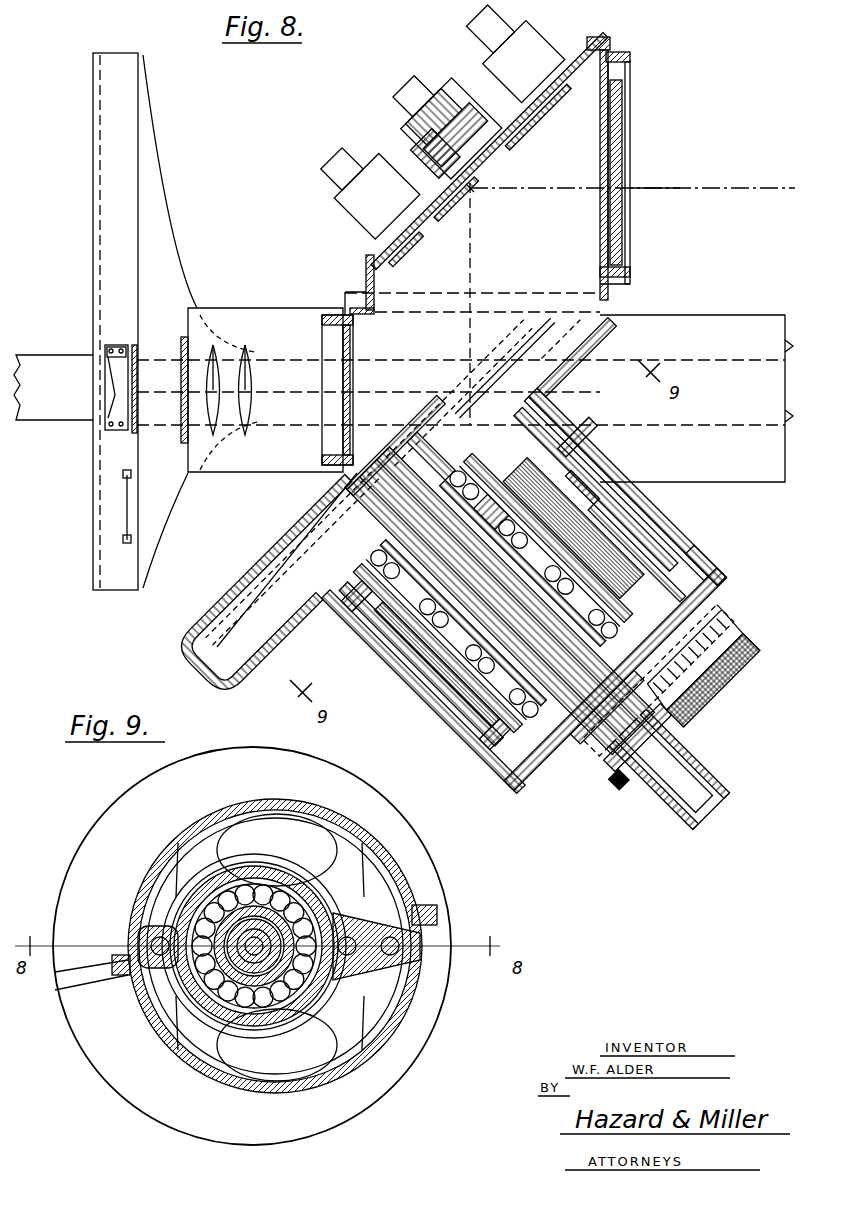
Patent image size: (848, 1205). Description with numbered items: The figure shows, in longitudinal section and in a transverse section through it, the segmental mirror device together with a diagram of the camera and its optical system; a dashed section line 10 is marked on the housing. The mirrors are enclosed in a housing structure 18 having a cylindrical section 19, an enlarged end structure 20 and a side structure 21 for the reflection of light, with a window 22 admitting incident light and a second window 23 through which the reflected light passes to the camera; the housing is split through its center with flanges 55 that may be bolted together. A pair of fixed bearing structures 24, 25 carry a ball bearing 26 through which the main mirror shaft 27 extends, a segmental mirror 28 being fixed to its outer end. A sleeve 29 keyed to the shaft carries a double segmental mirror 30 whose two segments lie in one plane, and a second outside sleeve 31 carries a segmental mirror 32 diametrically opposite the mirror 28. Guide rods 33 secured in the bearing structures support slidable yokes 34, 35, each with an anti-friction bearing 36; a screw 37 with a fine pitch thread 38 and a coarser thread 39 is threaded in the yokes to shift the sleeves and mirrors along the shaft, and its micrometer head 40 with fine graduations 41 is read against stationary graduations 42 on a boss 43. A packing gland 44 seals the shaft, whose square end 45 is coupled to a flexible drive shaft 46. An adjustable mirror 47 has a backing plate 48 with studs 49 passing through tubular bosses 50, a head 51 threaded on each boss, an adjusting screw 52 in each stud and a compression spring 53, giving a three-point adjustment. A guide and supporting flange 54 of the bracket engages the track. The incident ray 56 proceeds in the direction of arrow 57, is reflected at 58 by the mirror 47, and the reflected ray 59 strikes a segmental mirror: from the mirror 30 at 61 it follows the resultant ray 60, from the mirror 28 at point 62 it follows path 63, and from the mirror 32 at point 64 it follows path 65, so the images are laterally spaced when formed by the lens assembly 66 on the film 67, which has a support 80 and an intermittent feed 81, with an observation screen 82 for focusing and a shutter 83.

In FIG. 8, the optical axis light path 10 is at (556, 312).
In FIG. 8, the housing structure 18 is at (590, 345).
In FIG. 9, the housing structure 18 is at (402, 848).
In FIG. 8, the cylindrical section 19 is at (674, 536).
In FIG. 8, the enlarged end structure 20 is at (272, 642).
In FIG. 8, the side structure 21 is at (572, 58).
In FIG. 8, the window 22 is at (616, 170).
In FIG. 8, the second window 23 is at (325, 440).
In FIG. 8, the fixed bearing structure 24 is at (554, 416).
In FIG. 9, the fixed bearing structure 24 is at (382, 878).
In FIG. 8, the fixed bearing structure 25 is at (702, 560).
In FIG. 8, the ball bearing 26 is at (560, 725).
In FIG. 8, the main mirror shaft 27 is at (576, 690).
In FIG. 9, the main mirror shaft 27 is at (272, 908).
In FIG. 8, the segmental mirror 28 is at (380, 476).
In FIG. 8, the sleeve 29 is at (410, 478).
In FIG. 8, the double segmental mirror 30 is at (305, 560).
In FIG. 8, the second outside sleeve 31 is at (500, 500).
In FIG. 8, the segmental mirror 32 is at (506, 378).
In FIG. 8, the guide rods 33 is at (634, 537).
In FIG. 9, the guide rods 33 is at (152, 942).
In FIG. 8, the slidable yoke 34 is at (443, 640).
In FIG. 9, the slidable yoke 34 is at (372, 902).
In FIG. 8, the slidable yoke 35 is at (463, 704).
In FIG. 8, the anti-friction bearing 36 is at (438, 628).
In FIG. 9, the anti-friction bearing 36 is at (260, 1012).
In FIG. 8, the screw 37 is at (654, 543).
In FIG. 8, the fine pitch thread 38 is at (614, 520).
In FIG. 8, the coarse thread 39 is at (580, 438).
In FIG. 9, the coarse thread 39 is at (348, 962).
In FIG. 8, the micrometer head 40 is at (756, 643).
In FIG. 8, the fine graduations 41 is at (690, 656).
In FIG. 8, the stationary graduations 42 is at (682, 612).
In FIG. 8, the boss 43 is at (700, 702).
In FIG. 8, the packing gland 44 is at (610, 728).
In FIG. 8, the end of the shaft 45 is at (663, 782).
In FIG. 8, the flexible drive shaft 46 is at (716, 790).
In FIG. 8, the adjustable mirror 47 is at (514, 152).
In FIG. 8, the backing plate 48 is at (500, 128).
In FIG. 8, the studs 49 is at (443, 170).
In FIG. 8, the tubular boss 50 is at (536, 48).
In FIG. 8, the head 51 is at (432, 90).
In FIG. 8, the adjusting screw 52 is at (424, 118).
In FIG. 8, the compression spring 53 is at (428, 136).
In FIG. 8, the guide and supporting flange 54 is at (108, 572).
In FIG. 9, the flanges 55 is at (124, 985).
In FIG. 8, the path of incident ray 56 is at (656, 187).
In FIG. 8, the arrow 57 is at (750, 175).
In FIG. 8, the reflection point 58 is at (478, 192).
In FIG. 8, the reflected incident ray 59 is at (472, 276).
In FIG. 8, the resultant incident ray 60 is at (277, 388).
In FIG. 8, the reflection point 61 is at (470, 393).
In FIG. 8, the reflection point 62 is at (470, 366).
In FIG. 8, the resultant path 63 is at (300, 365).
In FIG. 8, the reflection point 64 is at (472, 424).
In FIG. 8, the resultant path 65 is at (270, 420).
In FIG. 8, the lens assembly 66 is at (233, 345).
In FIG. 8, the film 67 is at (130, 432).
In FIG. 8, the film support 80 is at (118, 412).
In FIG. 8, the intermittent feed 81 is at (110, 347).
In FIG. 8, the observation screen 82 is at (122, 515).
In FIG. 8, the shutter 83 is at (181, 355).